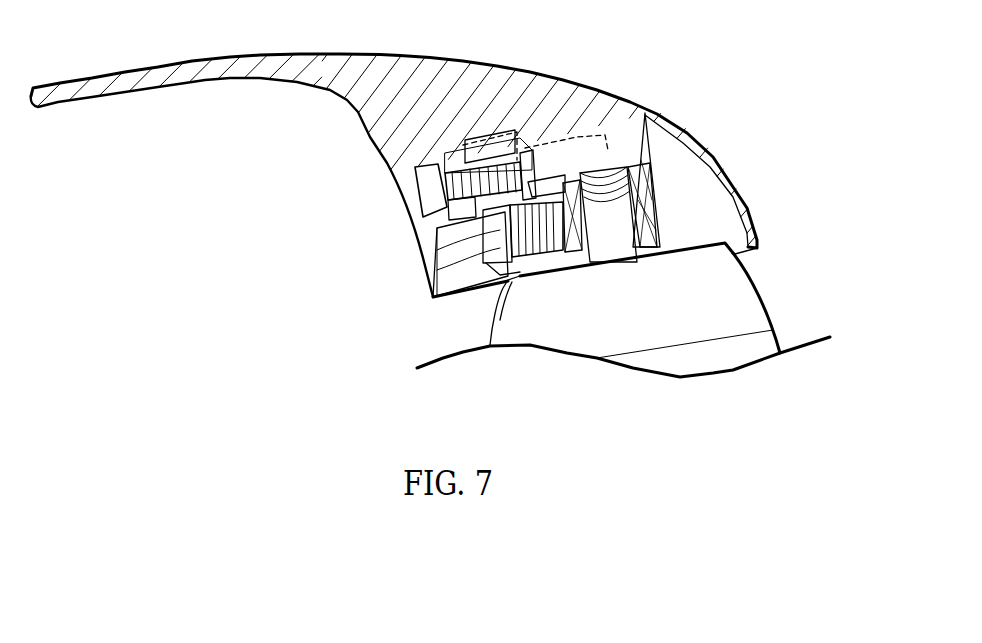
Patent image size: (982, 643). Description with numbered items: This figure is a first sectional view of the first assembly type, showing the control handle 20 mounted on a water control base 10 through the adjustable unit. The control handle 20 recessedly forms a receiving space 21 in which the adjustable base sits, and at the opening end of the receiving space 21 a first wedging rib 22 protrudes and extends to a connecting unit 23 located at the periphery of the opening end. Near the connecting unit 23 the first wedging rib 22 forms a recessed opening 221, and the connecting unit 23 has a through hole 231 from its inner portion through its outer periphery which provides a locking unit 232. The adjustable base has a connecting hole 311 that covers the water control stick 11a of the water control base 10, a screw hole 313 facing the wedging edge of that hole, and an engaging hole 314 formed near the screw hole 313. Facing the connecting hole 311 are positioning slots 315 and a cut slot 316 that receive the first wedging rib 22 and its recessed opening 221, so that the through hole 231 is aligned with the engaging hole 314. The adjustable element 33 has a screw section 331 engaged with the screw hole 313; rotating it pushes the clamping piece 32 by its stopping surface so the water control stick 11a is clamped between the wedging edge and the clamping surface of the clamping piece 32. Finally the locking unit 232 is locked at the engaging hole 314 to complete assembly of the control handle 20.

The water control base 10 is at (742, 307).
The water control stick 11a is at (725, 212).
The control handle 20 is at (562, 99).
The receiving space 21 is at (700, 228).
The first wedging rib 22 is at (701, 178).
The connecting unit 23 is at (406, 190).
The through hole 231 is at (413, 185).
The locking unit 232 is at (406, 209).
The recessed opening 221 is at (526, 89).
The clamping piece 32 is at (493, 325).
The adjustable element 33 is at (543, 230).
The connecting hole 311 is at (652, 197).
The screw hole 313 is at (410, 260).
The engaging hole 314 is at (470, 195).
The positioning slot 315 is at (646, 116).
The cut slot 316 is at (500, 150).
The screw section 331 is at (530, 250).